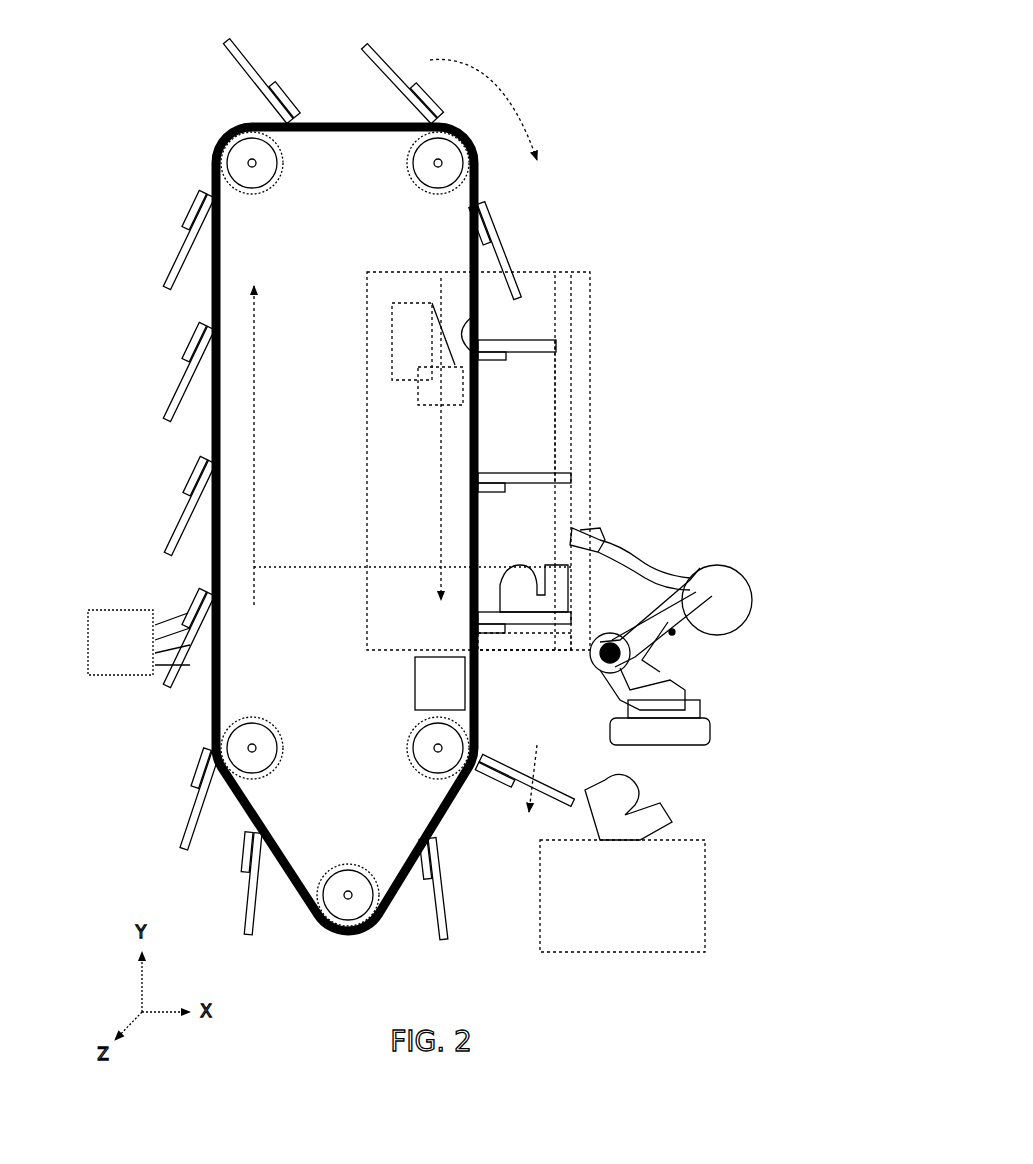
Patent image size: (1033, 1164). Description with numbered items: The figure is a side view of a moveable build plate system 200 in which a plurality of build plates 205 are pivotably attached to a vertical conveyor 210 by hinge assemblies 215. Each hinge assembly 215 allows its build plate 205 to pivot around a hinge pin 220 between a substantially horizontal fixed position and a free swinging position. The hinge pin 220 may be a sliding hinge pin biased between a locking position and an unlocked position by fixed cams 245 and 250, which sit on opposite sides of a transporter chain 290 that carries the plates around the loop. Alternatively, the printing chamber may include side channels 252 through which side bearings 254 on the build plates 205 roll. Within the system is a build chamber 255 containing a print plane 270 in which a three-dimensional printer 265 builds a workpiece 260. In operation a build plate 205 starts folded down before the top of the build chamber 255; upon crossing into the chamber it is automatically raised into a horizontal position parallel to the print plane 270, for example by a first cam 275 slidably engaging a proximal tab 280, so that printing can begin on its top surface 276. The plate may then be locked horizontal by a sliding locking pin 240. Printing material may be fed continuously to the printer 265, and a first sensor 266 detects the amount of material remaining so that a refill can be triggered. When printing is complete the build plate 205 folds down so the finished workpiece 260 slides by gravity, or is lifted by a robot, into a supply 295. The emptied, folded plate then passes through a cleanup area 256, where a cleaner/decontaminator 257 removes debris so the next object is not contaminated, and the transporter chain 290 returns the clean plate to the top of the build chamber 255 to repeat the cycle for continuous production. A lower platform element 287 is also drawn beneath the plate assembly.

The moveable build plate (MBP) system 200 is at (650, 96).
The build plate 205 is at (500, 963).
The vertical conveyor 210 is at (210, 306).
The hinge assembly 215 is at (490, 358).
The hinge pin 220 is at (488, 210).
The sliding locking pin 240 is at (486, 206).
The fixed cam 245 is at (418, 395).
The fixed cam 250 is at (415, 686).
The side channel 252 is at (565, 508).
The side bearing 254 is at (570, 345).
The build chamber 255 is at (572, 430).
The cleanup area 256 is at (170, 610).
The cleaner/decontaminator 257 is at (136, 654).
The workpiece 260 is at (518, 563).
The 3D printer 265 is at (745, 598).
The first sensor 266 is at (688, 640).
The print plane 270 is at (378, 510).
The first cam 275 is at (392, 328).
The top surface 276 is at (560, 340).
The proximal tab 280 is at (477, 313).
The lower platform 287 is at (500, 650).
The transporter chain 290 is at (213, 722).
The supply 295 is at (602, 906).